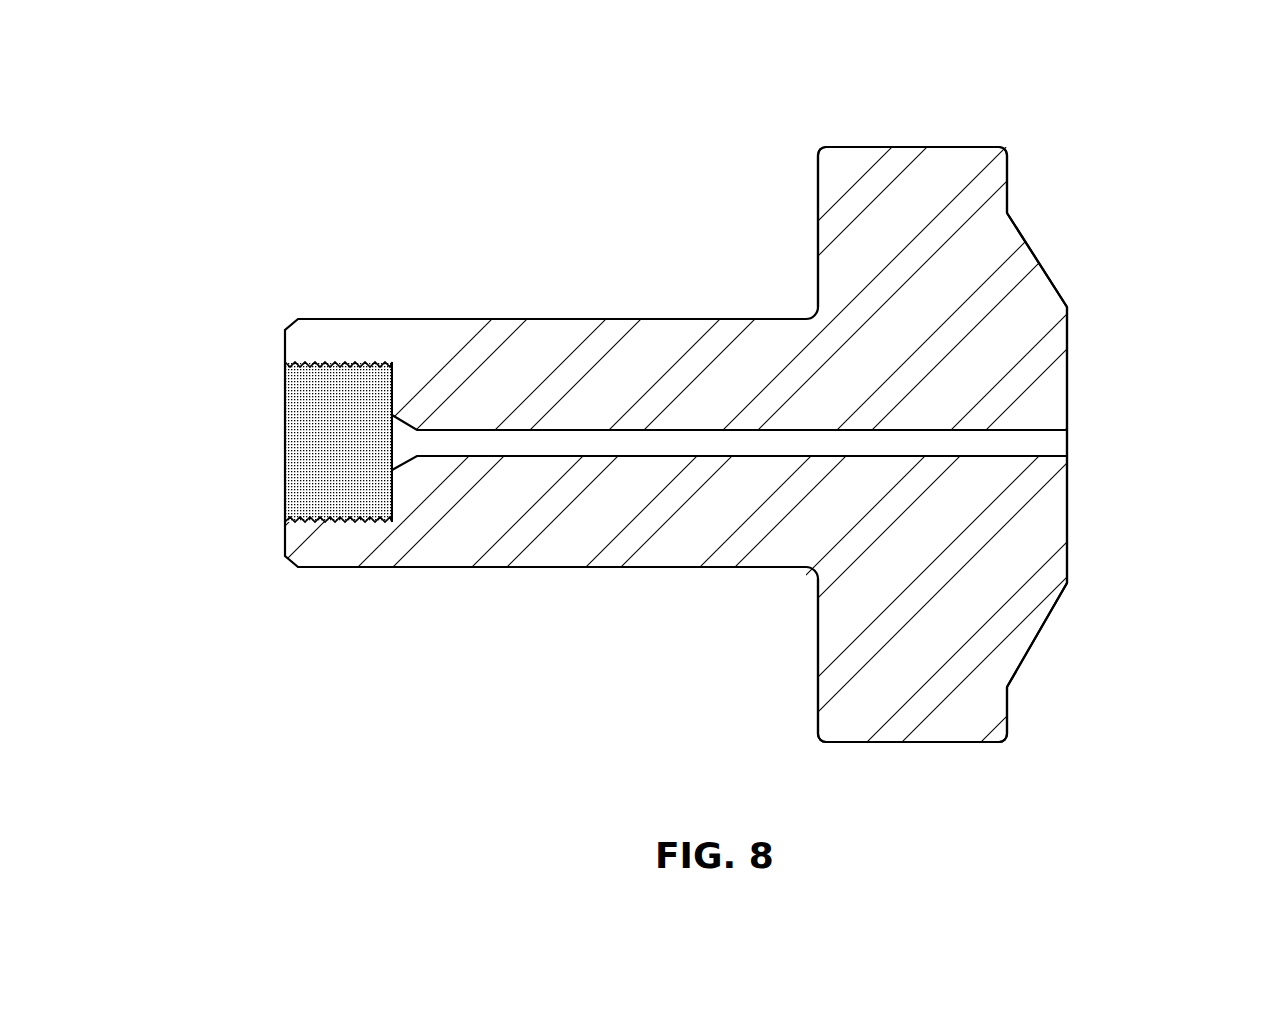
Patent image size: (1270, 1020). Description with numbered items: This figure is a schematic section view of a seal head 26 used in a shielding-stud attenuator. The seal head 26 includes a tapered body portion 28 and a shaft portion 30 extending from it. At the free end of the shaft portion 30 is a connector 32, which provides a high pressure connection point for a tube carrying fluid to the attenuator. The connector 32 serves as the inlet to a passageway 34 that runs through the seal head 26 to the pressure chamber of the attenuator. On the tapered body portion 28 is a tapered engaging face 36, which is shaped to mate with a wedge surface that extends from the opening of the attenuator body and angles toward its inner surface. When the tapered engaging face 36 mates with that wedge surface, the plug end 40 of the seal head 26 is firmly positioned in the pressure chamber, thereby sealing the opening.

The seal head 26 is at (428, 162).
The tapered body portion 28 is at (923, 220).
The shaft portion 30 is at (698, 320).
The connector 32 is at (303, 443).
The passageway 34 is at (647, 445).
The tapered engaging face 36 is at (1035, 255).
The plug end 40 is at (1067, 492).